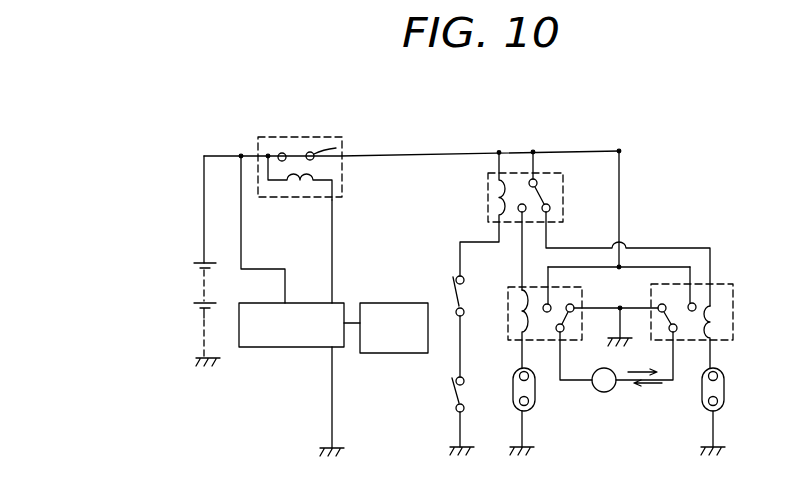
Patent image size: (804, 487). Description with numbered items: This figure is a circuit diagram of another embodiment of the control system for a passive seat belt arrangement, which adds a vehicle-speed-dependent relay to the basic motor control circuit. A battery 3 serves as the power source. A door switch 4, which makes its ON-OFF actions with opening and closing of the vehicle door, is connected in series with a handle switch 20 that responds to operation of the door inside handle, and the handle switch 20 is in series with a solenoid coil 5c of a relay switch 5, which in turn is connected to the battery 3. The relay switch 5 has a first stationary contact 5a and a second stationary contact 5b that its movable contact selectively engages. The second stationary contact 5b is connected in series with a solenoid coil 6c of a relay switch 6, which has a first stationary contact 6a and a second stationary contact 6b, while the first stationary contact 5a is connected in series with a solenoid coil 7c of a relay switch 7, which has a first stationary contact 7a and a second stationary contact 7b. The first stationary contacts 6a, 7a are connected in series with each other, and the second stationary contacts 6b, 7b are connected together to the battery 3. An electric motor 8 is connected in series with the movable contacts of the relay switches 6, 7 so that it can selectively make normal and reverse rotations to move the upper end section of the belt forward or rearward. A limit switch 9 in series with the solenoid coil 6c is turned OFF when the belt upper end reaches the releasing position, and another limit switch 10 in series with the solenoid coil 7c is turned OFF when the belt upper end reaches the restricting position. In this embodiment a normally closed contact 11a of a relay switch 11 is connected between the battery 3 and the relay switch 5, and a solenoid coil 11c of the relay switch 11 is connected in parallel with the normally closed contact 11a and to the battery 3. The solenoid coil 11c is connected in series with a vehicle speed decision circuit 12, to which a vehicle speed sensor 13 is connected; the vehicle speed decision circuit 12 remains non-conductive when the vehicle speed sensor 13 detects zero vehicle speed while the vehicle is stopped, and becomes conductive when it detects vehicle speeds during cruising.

The battery 3 is at (195, 267).
The door switch 4 is at (454, 398).
The relay switch 5 is at (574, 229).
The first stationary contact 5a is at (550, 204).
The second stationary contact 5b is at (520, 214).
The solenoid coil 5c is at (488, 199).
The relay switch 6 is at (565, 309).
The first stationary contact 6a is at (572, 306).
The second stationary contact 6b is at (545, 302).
The solenoid coil 6c is at (510, 301).
The relay switch 7 is at (694, 311).
The first stationary contact 7a is at (658, 303).
The second stationary contact 7b is at (696, 301).
The solenoid coil 7c is at (717, 319).
The electric motor 8 is at (602, 393).
The limit switch 9 is at (536, 404).
The limit switch 10 is at (726, 400).
The relay switch 11 is at (321, 159).
The normally closed contact 11a is at (336, 148).
The solenoid coil 11c is at (300, 183).
The vehicle speed decision circuit 12 is at (255, 350).
The vehicle speed sensor 13 is at (378, 355).
The handle switch 20 is at (453, 298).